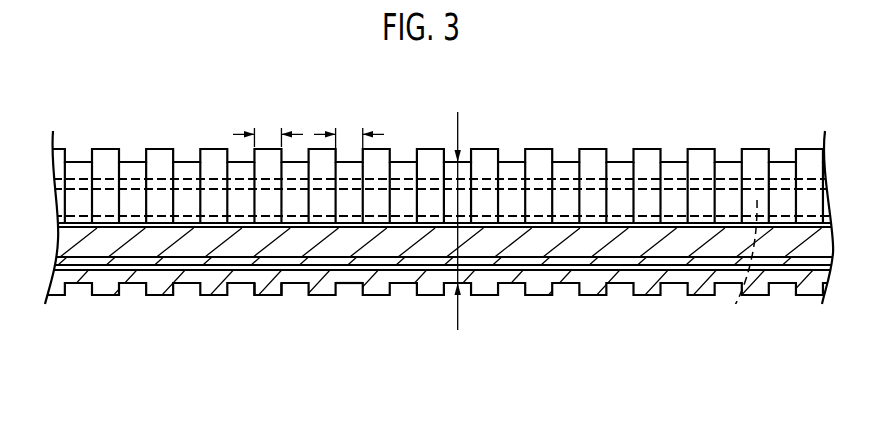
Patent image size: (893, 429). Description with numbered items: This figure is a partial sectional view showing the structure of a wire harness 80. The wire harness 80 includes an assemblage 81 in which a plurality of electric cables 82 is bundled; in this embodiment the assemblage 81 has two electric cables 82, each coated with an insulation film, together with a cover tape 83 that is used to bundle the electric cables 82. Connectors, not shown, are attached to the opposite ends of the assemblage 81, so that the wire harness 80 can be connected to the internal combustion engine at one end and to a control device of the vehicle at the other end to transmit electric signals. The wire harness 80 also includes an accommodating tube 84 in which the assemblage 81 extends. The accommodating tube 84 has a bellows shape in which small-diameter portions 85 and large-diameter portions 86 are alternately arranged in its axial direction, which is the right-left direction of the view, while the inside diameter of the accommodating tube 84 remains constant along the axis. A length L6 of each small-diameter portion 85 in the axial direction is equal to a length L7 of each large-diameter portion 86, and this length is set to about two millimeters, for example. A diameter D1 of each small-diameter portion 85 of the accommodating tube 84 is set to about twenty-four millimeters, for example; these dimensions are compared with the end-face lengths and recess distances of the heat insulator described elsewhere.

The wire harness 80 is at (573, 126).
The assemblage 81 is at (730, 353).
The electric cable 82 is at (715, 248).
The cover tape 83 is at (675, 260).
The accommodating tube 84 is at (593, 288).
The small-diameter portion 85 is at (349, 284).
The large-diameter portion 86 is at (270, 297).
The length of small-diameter portion L6 is at (348, 136).
The length of large-diameter portion L7 is at (268, 136).
The diameter of small-diameter portion D1 is at (452, 170).